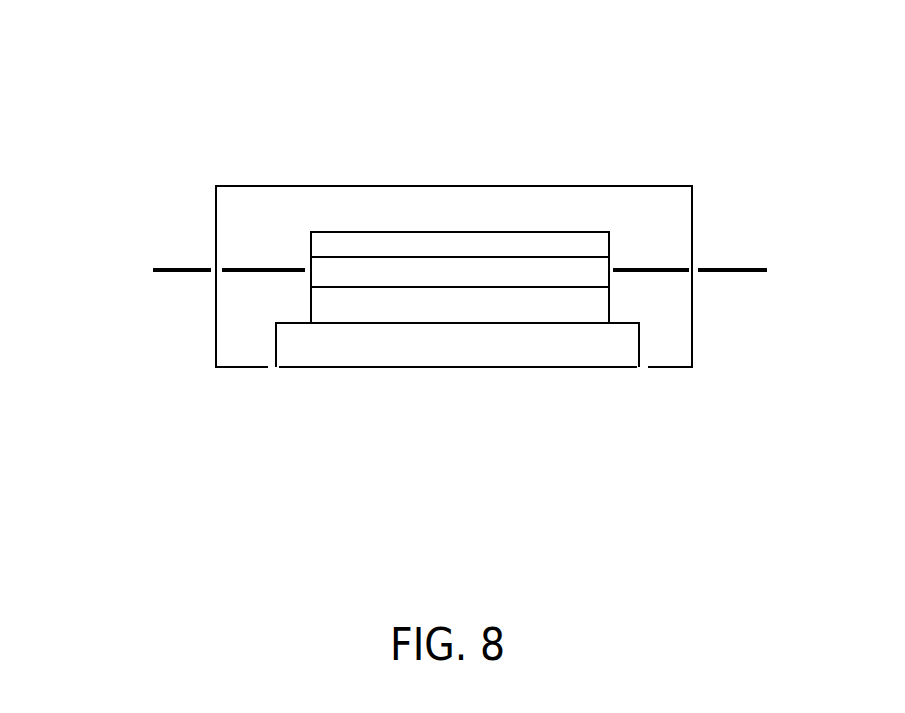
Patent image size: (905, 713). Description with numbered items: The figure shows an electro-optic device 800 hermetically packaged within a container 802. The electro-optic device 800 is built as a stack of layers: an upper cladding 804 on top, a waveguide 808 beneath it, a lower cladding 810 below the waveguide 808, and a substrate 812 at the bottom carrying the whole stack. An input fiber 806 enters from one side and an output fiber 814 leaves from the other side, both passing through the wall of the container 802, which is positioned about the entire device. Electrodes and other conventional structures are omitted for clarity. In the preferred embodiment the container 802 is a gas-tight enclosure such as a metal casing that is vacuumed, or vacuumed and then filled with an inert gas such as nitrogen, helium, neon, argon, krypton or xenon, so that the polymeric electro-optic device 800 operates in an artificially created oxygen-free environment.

The electro-optic device 800 is at (496, 52).
The container 802 is at (488, 173).
The upper cladding 804 is at (471, 247).
The input fiber 806 is at (183, 262).
The waveguide 808 is at (353, 272).
The lower cladding 810 is at (468, 305).
The substrate 812 is at (570, 345).
The output fiber 814 is at (750, 255).